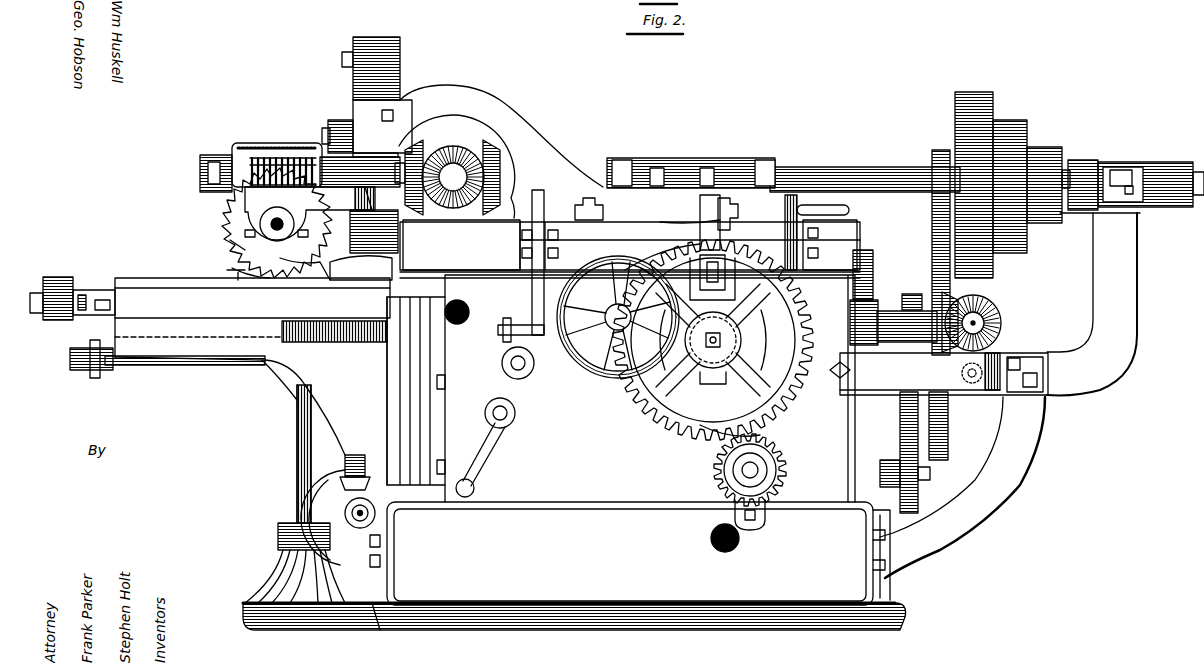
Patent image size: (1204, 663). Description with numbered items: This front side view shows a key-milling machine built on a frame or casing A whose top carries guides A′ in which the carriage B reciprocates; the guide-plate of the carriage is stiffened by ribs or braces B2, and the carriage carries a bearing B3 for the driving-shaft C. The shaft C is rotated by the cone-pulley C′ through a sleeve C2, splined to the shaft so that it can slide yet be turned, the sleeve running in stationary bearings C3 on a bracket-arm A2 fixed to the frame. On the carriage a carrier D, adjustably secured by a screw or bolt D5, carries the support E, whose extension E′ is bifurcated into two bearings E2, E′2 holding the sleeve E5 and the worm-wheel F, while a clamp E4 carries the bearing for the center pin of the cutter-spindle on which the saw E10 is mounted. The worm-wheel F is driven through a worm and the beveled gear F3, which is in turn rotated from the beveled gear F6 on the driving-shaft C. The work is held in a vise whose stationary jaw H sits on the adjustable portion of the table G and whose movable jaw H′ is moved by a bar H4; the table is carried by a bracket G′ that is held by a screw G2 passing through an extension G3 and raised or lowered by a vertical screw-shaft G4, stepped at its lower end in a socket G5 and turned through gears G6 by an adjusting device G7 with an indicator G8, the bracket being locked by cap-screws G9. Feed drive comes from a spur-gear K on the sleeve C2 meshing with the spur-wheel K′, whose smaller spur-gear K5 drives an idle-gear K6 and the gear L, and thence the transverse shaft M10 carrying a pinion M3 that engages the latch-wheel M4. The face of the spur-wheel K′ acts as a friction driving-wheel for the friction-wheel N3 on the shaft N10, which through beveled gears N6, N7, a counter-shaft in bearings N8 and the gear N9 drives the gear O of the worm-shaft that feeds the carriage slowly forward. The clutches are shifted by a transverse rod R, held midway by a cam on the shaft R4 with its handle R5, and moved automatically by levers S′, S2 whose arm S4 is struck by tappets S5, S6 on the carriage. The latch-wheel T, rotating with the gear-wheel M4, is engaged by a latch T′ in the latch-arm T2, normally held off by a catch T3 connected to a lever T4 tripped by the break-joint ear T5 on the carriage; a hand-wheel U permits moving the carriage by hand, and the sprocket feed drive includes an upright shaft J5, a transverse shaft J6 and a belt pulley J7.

The frame or casing A is at (574, 452).
The guides A′ is at (501, 230).
The bracket-arm A2 is at (1010, 395).
The carriage B is at (400, 244).
The strengthening ribs or braces B2 is at (501, 151).
The bearing B3 is at (691, 163).
The driving-shaft C is at (920, 170).
The cone-pulley C′ is at (1008, 184).
The sleeve C2 is at (1076, 160).
The stationary bearings C3 is at (1158, 162).
The carrier D is at (382, 95).
The screw or bolt D5 is at (342, 57).
The support E is at (362, 186).
The extension of the support E′ is at (278, 162).
The bearing E′2 is at (398, 150).
The bearings E2 is at (286, 238).
The clamp E4 is at (452, 178).
The sleeve E5 is at (280, 242).
The saw E10 is at (220, 245).
The worm-wheel F is at (225, 222).
The beveled gear F3 is at (453, 140).
The beveled gear F6 is at (505, 192).
The table G is at (252, 317).
The bracket G′ is at (251, 391).
The screw G2 is at (94, 294).
The extension of the bracket G3 is at (56, 278).
The vertical screw-shaft G4 is at (297, 448).
The foot G5 is at (295, 563).
The gears G6 is at (282, 388).
The adjusting device G7 is at (192, 366).
The indicator G8 is at (100, 378).
The cap-screw or bolts G9 is at (440, 372).
The stationary jaw H is at (227, 270).
The movable jaw H′ is at (292, 282).
The bar H4 is at (378, 272).
The upright shaft J5 is at (350, 455).
The transverse shaft J6 is at (372, 518).
The belt wheel or pulley J7 is at (360, 572).
The spur-gear K is at (933, 158).
The spur-wheel K′ is at (950, 438).
The smaller spur-gear K5 is at (913, 294).
The idle-gear K6 is at (896, 452).
The gear L is at (920, 492).
The pinion M3 is at (782, 450).
The latch-wheel M4 is at (695, 437).
The transverse shaft M10 is at (760, 474).
The friction-wheel N3 is at (1000, 320).
The beveled gear N6 is at (985, 312).
The beveled gear N7 is at (955, 355).
The bearings N8 is at (907, 326).
The gear N9 is at (868, 347).
The shaft N10 is at (1002, 330).
The gear O is at (868, 262).
The rod R is at (522, 370).
The shaft R4 is at (486, 414).
The handle R5 is at (481, 460).
The lever S′ is at (528, 300).
The lever S2 is at (825, 236).
The arm S4 is at (850, 210).
The tappet S5 is at (579, 206).
The tappet S6 is at (782, 232).
The latch-wheel T is at (713, 340).
The latch T′ is at (735, 305).
The latch-arm T2 is at (655, 262).
The catch T3 is at (704, 219).
The lever T4 is at (686, 211).
The break-joint ear T5 is at (725, 207).
The hand-wheel U is at (618, 324).